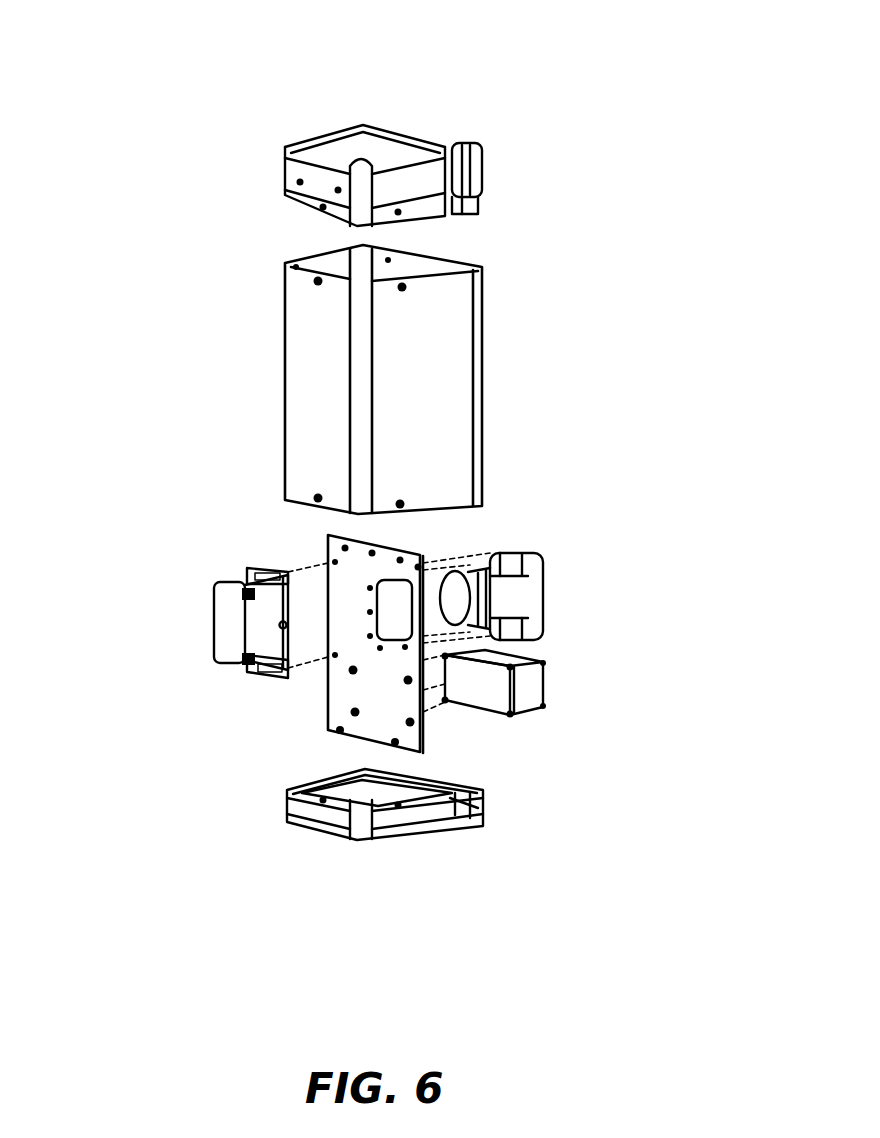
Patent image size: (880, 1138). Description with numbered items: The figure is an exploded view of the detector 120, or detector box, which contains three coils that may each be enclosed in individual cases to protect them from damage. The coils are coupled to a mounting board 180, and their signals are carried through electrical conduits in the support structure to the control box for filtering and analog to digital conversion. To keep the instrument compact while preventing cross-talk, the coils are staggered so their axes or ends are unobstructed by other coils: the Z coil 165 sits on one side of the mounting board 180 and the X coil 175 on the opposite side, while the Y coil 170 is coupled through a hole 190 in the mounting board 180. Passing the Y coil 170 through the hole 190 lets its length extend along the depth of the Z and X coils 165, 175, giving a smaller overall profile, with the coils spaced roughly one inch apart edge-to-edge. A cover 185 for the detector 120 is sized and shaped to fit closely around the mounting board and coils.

The detector 120 is at (597, 73).
The Z coil 165 is at (222, 624).
The Y coil 170 is at (520, 603).
The X coil 175 is at (525, 675).
The mounting board 180 is at (336, 697).
The cover 185 is at (448, 350).
The hole 190 is at (401, 596).